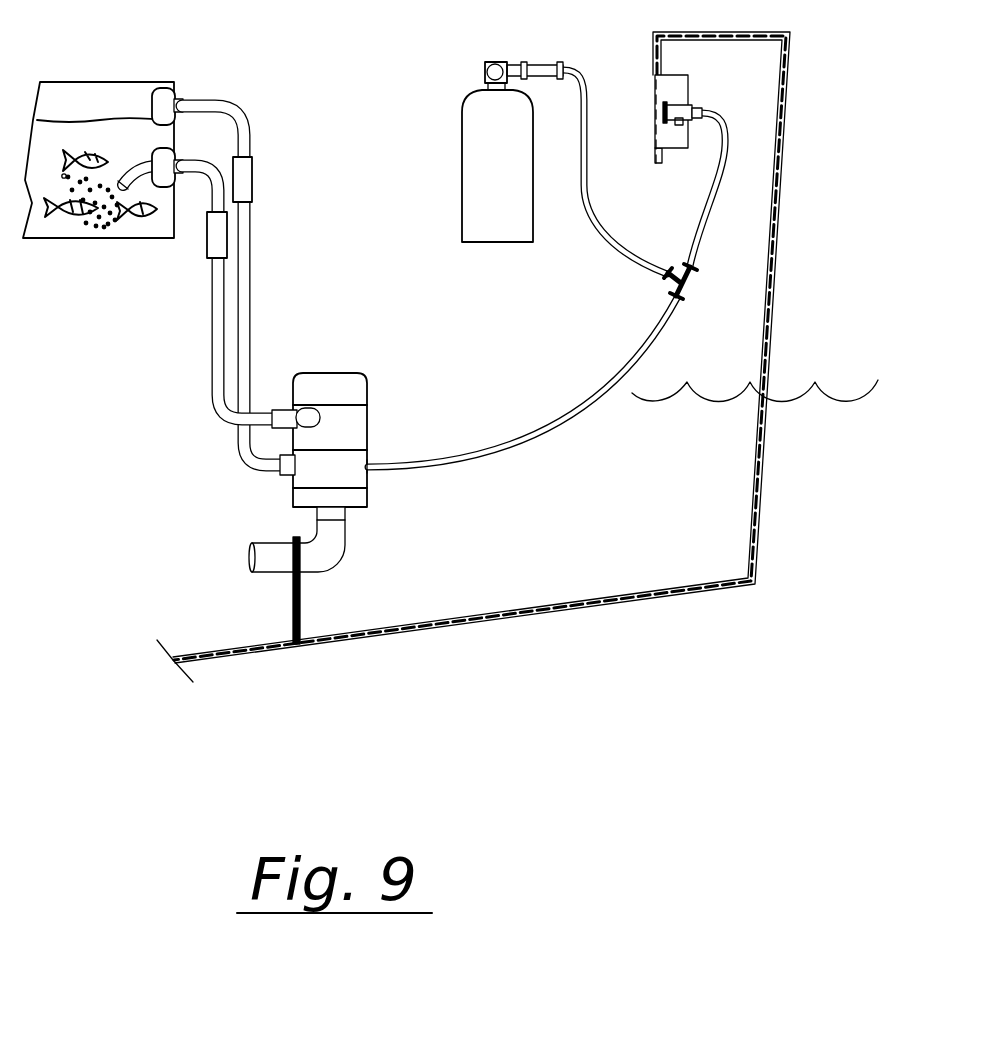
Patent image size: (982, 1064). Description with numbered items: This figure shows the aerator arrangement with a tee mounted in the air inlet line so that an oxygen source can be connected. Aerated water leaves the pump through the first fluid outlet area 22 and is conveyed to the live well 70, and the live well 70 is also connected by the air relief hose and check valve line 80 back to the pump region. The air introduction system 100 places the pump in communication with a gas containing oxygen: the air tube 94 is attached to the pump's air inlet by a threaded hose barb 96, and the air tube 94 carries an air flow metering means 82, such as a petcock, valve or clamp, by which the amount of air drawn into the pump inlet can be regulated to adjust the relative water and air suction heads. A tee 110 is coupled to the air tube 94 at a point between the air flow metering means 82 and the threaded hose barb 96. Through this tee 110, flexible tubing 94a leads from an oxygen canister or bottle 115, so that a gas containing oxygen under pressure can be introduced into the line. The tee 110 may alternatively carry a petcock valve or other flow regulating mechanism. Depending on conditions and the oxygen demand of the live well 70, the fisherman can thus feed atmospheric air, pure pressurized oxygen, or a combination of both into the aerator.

The live well 70 is at (110, 88).
The air relief hose and check valve line 80 is at (265, 238).
The first fluid outlet area 22 is at (290, 373).
The threaded hose barb 96 is at (369, 466).
The air tube 94 is at (582, 405).
The flexible tubing 94a is at (593, 213).
The tee 110 is at (672, 284).
The oxygen canister or bottle 115 is at (468, 122).
The air flow metering means 82 is at (678, 90).
The air introduction system 100 is at (747, 228).